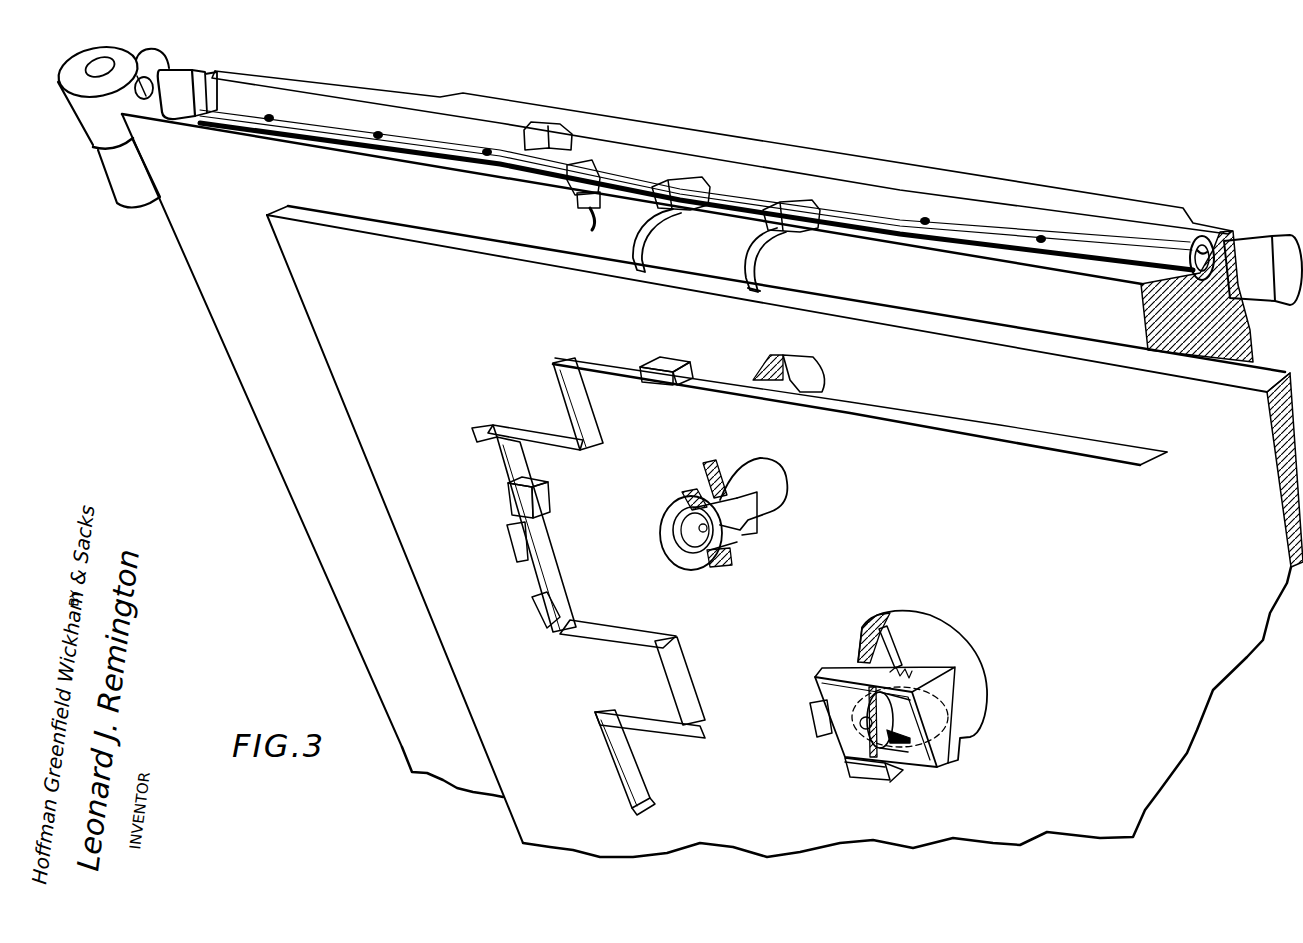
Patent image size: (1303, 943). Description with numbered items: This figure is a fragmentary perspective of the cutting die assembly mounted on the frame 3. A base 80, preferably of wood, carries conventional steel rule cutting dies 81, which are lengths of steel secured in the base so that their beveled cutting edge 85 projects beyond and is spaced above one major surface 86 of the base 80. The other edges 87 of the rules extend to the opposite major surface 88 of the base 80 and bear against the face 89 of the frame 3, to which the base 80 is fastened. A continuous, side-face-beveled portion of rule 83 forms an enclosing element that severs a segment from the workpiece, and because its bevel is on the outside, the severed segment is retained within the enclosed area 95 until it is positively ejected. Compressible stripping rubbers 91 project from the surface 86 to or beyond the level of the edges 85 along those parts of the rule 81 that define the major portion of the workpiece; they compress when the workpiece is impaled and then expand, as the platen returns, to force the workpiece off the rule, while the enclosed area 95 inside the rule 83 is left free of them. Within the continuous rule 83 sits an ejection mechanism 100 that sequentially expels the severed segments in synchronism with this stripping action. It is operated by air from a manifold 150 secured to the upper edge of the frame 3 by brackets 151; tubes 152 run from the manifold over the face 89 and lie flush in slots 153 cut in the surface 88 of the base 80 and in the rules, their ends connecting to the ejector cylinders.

The frame 3 is at (313, 173).
The air manifold 150 is at (746, 182).
The brackets 151 is at (540, 135).
The tubes 152 is at (648, 240).
The slots 153 is at (765, 285).
The base 80 is at (368, 228).
The steel rule cutting dies 81 is at (572, 358).
The continuous rule 83 is at (742, 543).
The beveled edge 85 is at (713, 390).
The major surface of the base 86 is at (481, 348).
The other edges of the rules 87 is at (815, 378).
The other major surface of the base 88 is at (757, 375).
The face of the frame 89 is at (500, 207).
The stripping rubbers 91 is at (655, 372).
The enclosed areas 95 is at (683, 537).
The ejection mechanism 100 is at (735, 508).